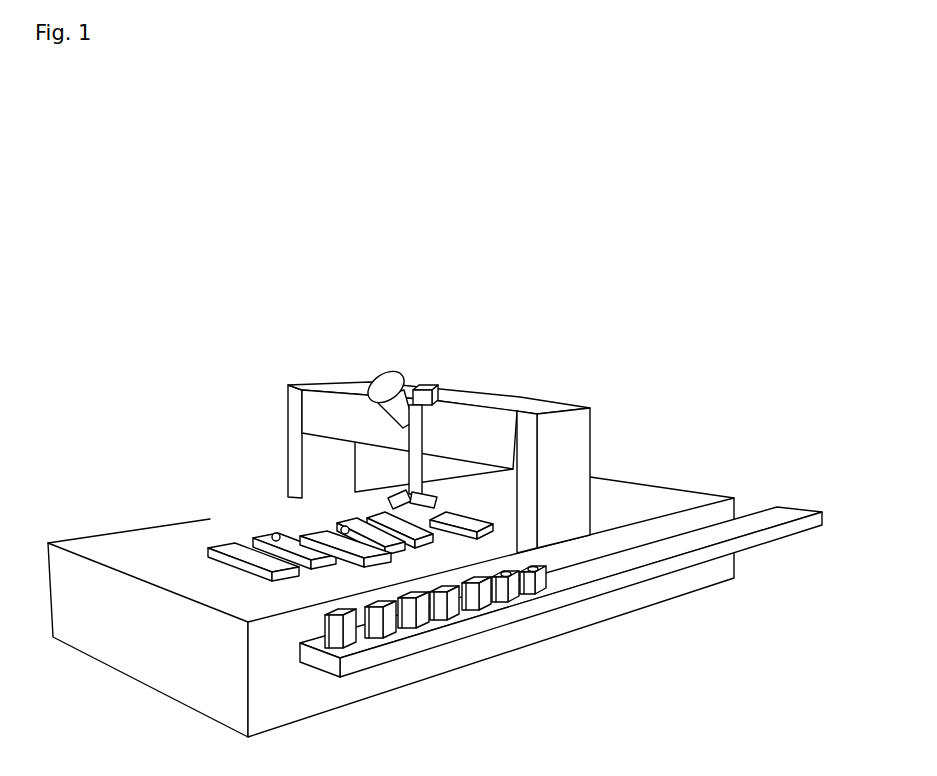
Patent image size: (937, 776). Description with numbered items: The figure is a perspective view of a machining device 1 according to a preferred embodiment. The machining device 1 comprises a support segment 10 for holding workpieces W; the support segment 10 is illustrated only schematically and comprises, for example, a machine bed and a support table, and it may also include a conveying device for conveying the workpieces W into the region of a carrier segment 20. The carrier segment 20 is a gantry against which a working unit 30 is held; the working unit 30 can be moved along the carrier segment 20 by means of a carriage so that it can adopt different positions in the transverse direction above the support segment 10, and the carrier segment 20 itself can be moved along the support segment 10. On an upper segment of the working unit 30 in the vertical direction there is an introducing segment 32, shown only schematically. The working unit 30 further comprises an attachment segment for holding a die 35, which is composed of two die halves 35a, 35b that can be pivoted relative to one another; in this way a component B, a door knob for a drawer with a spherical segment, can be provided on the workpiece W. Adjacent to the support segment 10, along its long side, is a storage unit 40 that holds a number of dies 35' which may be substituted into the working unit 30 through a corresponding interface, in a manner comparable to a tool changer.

The machining device 1 is at (541, 270).
The support segment 10 is at (163, 537).
The carrier segment 20 is at (581, 402).
The working unit 30 is at (423, 384).
The introducing segment 32 is at (378, 378).
The die 35 is at (455, 420).
The die half 35a is at (400, 500).
The die half 35b is at (405, 490).
The dies 35' is at (435, 655).
The storage unit 40 is at (545, 606).
The workpiece W is at (300, 535).
The component B is at (276, 533).